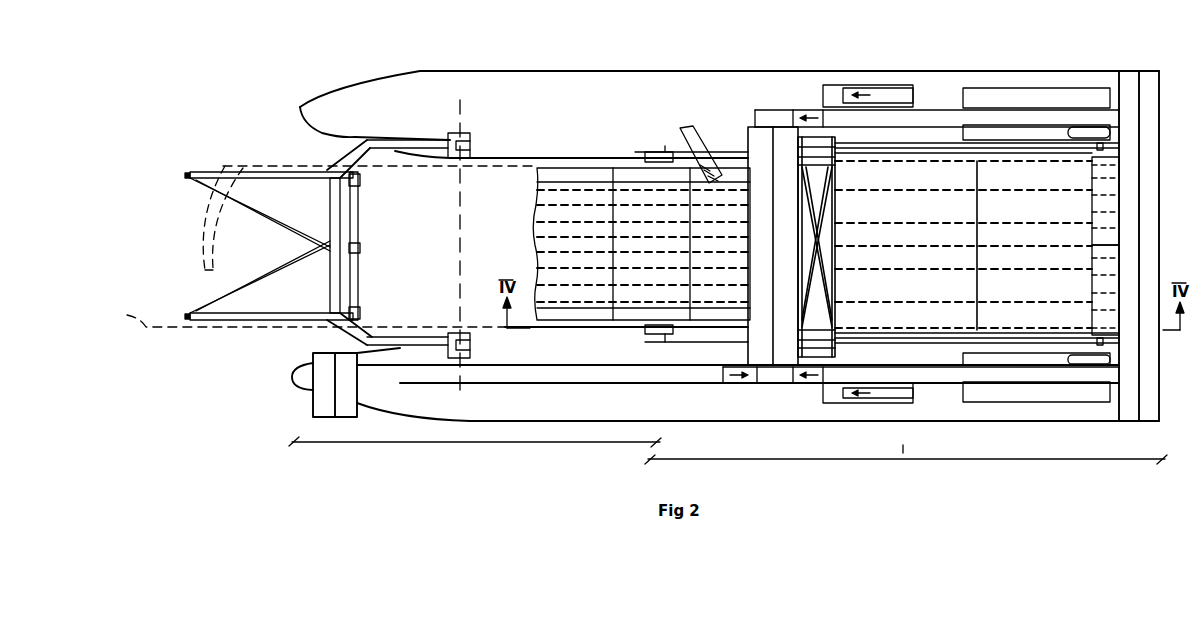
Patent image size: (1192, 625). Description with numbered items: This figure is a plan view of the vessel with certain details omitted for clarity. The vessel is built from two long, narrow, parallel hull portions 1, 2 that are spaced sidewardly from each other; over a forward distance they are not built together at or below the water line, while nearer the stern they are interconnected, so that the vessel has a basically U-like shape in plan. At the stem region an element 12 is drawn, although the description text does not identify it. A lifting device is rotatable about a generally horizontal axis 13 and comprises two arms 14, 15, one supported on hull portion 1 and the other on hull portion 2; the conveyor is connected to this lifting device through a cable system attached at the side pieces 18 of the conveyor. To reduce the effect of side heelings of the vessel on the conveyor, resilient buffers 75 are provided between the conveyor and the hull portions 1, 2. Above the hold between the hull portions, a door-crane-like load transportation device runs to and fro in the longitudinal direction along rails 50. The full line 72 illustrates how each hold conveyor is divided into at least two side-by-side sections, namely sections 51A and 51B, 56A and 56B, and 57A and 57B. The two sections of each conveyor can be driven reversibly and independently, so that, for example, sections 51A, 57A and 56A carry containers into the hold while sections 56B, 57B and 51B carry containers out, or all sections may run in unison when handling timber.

The hull portion 1 is at (472, 413).
The hull portion 2 is at (518, 84).
The bow frame 12 is at (212, 168).
The horizontal axis 13 is at (461, 226).
The arm 14 is at (393, 146).
The arm 15 is at (380, 346).
The side piece 18 is at (560, 316).
The rail 50 is at (920, 145).
The conveyor section 51A is at (1108, 205).
The conveyor section 51B is at (1112, 287).
The conveyor section 56A is at (963, 192).
The conveyor section 56B is at (963, 287).
The conveyor section 57A is at (1029, 203).
The conveyor section 57B is at (1016, 288).
The full line 72 is at (994, 241).
The resilient buffer 75 is at (663, 160).